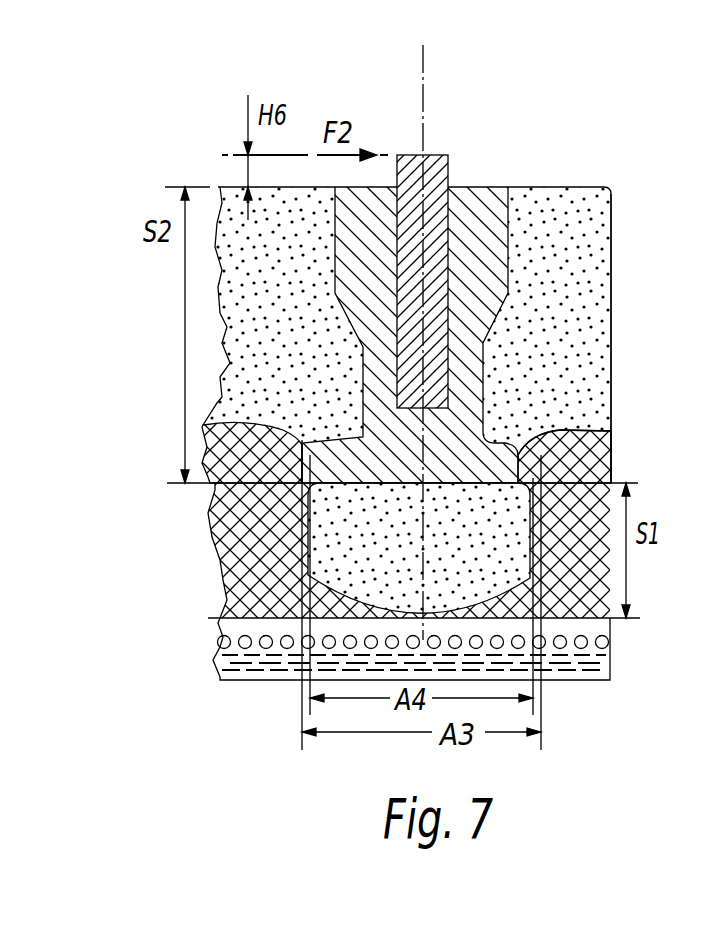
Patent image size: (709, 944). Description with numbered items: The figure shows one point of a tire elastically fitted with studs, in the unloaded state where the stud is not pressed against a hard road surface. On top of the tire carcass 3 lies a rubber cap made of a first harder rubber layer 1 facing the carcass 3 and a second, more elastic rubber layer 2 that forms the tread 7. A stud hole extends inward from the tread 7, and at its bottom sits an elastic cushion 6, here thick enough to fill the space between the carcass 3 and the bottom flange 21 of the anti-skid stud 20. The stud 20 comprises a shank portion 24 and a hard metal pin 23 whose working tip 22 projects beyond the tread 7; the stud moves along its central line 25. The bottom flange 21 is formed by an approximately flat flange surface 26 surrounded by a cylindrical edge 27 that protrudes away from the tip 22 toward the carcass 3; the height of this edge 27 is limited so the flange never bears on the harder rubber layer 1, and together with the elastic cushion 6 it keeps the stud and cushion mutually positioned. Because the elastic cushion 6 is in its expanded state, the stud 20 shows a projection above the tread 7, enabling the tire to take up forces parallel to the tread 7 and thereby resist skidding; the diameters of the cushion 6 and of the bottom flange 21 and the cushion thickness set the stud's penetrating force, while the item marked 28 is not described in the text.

The first harder rubber layer 1 is at (225, 548).
The second rubber layer 2 is at (567, 197).
The carcass 3 is at (605, 660).
The elastic cushion 6 is at (483, 588).
The tread 7 is at (603, 187).
The anti-skid stud 20 is at (478, 290).
The bottom flange 21 is at (350, 440).
The tip 22 is at (437, 155).
The hard metal pin 23 is at (457, 170).
The shank portion 24 is at (370, 347).
The central line 25 is at (425, 548).
The flange surface 26 is at (492, 480).
The cylindrical edge 27 is at (565, 455).
The wall top 28 is at (585, 430).